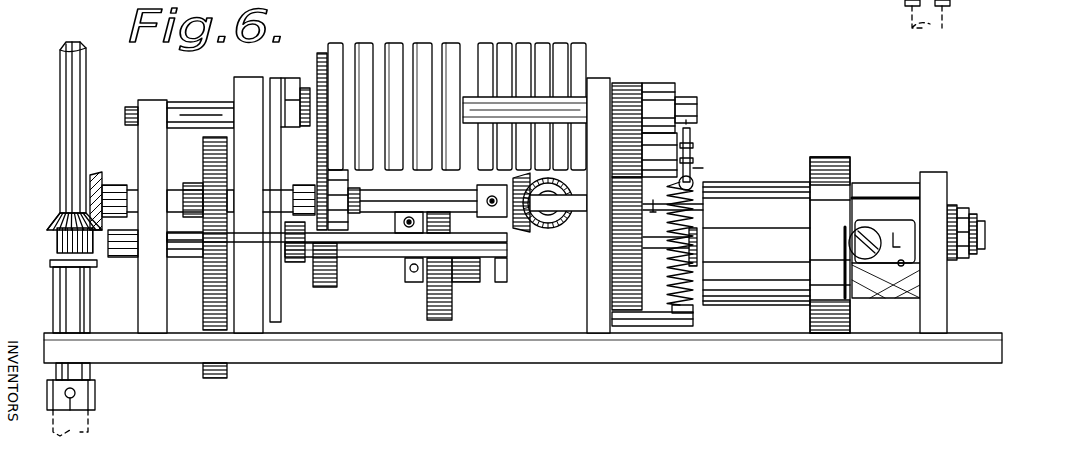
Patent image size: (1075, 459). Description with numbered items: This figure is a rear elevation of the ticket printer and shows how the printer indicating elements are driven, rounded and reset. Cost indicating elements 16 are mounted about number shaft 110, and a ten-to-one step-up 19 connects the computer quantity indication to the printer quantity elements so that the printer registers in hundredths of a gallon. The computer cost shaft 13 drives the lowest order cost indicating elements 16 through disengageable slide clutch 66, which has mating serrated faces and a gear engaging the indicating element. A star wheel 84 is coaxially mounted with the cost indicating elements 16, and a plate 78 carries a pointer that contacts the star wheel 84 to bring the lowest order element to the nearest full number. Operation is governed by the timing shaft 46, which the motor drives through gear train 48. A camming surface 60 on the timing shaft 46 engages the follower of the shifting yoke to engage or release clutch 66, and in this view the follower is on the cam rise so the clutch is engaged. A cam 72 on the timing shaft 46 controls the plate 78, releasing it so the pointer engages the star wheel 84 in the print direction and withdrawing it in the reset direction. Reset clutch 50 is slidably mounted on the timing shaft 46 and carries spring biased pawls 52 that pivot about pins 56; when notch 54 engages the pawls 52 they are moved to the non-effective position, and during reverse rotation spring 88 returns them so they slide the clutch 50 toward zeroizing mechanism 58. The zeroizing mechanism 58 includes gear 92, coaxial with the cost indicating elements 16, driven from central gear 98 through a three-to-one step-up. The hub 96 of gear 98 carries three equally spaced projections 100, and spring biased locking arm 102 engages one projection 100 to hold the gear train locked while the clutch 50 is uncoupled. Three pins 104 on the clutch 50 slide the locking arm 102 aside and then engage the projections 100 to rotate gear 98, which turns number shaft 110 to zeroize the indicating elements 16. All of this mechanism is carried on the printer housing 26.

The computer cost shaft 13 is at (552, 222).
The cost indicating elements 16 is at (398, 48).
The ten-to-one step-up 19 is at (530, 46).
The printer housing 26 is at (148, 328).
The timing shaft 46 is at (498, 243).
The gear train 48 is at (205, 275).
The reset clutch 50 is at (777, 200).
The pawls 52 is at (892, 235).
The notch 54 is at (842, 228).
The pins 56 is at (857, 183).
The zeroizing mechanism 58 is at (710, 142).
The camming surface 60 is at (340, 272).
The disengageable clutch 66 is at (340, 180).
The cam 72 is at (283, 260).
The plate 78 is at (248, 205).
The star wheel 84 is at (308, 88).
The spring 88 is at (910, 186).
The gear 92 is at (628, 96).
The hub 96 is at (668, 247).
The central gear 98 is at (613, 283).
The projections 100 is at (655, 196).
The locking arm 102 is at (696, 166).
The pins 104 is at (700, 204).
The number shaft 110 is at (565, 108).